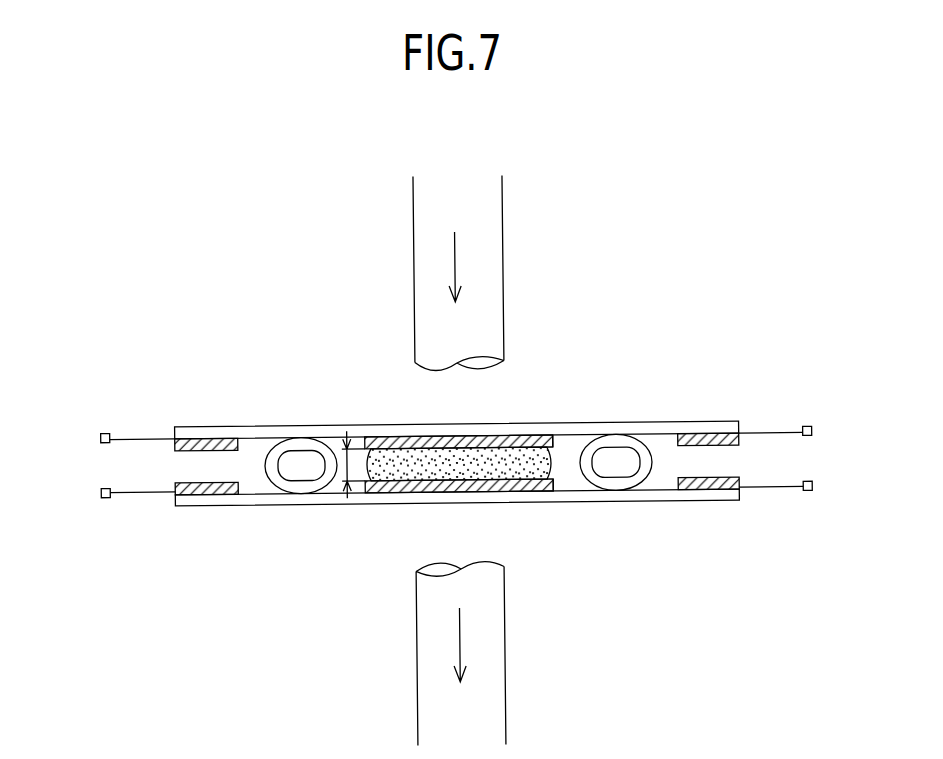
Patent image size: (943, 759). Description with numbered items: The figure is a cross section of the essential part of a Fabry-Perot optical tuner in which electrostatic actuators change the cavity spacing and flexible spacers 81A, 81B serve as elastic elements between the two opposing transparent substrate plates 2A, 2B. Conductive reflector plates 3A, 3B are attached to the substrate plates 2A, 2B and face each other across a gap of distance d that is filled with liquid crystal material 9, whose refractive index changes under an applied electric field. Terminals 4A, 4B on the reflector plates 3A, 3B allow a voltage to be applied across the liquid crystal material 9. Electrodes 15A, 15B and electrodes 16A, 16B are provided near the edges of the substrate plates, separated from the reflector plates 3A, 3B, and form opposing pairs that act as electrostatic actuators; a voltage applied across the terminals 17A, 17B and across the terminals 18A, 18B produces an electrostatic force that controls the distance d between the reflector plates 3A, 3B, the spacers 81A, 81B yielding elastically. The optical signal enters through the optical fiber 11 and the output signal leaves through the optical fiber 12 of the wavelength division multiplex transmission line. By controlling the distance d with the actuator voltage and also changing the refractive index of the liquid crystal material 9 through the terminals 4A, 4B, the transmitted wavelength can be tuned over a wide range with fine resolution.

The optical fiber 11 is at (505, 240).
The optical fiber 12 is at (503, 656).
The transparent substrate plate 2A is at (522, 428).
The transparent substrate plate 2B is at (305, 503).
The conductive reflector plate 3A is at (393, 444).
The conductive reflector plate 3B is at (388, 491).
The terminal 4A is at (554, 440).
The terminal 4B is at (554, 488).
The liquid crystal material 9 is at (478, 473).
The flexible spacer 81A is at (298, 445).
The flexible spacer 81B is at (613, 440).
The electrode 15A is at (205, 436).
The electrode 15B is at (203, 503).
The electrode 16A is at (708, 436).
The electrode 16B is at (705, 492).
The terminal 17A is at (104, 438).
The terminal 17B is at (104, 495).
The terminal 18A is at (807, 431).
The terminal 18B is at (807, 487).
The distance d is at (355, 464).